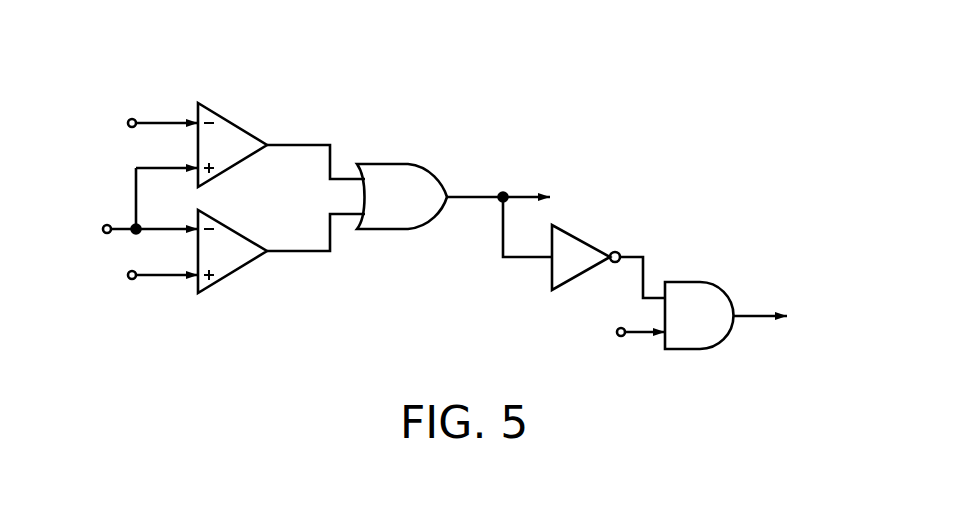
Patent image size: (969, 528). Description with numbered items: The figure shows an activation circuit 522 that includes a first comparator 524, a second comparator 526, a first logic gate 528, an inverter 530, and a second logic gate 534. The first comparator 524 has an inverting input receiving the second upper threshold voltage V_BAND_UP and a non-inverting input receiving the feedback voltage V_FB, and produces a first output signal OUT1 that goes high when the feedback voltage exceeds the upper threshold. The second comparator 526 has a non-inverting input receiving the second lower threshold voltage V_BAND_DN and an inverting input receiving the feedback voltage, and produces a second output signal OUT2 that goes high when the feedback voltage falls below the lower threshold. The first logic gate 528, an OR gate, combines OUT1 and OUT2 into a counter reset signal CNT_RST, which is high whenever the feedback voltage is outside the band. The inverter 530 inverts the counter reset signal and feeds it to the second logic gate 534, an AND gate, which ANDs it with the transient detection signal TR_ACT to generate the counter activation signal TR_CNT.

The activation circuit 522 is at (62, 60).
The first comparator 524 is at (233, 112).
The second comparator 526 is at (240, 226).
The first logic gate 528 is at (435, 174).
The inverter 530 is at (596, 243).
The second logic gate 534 is at (720, 286).